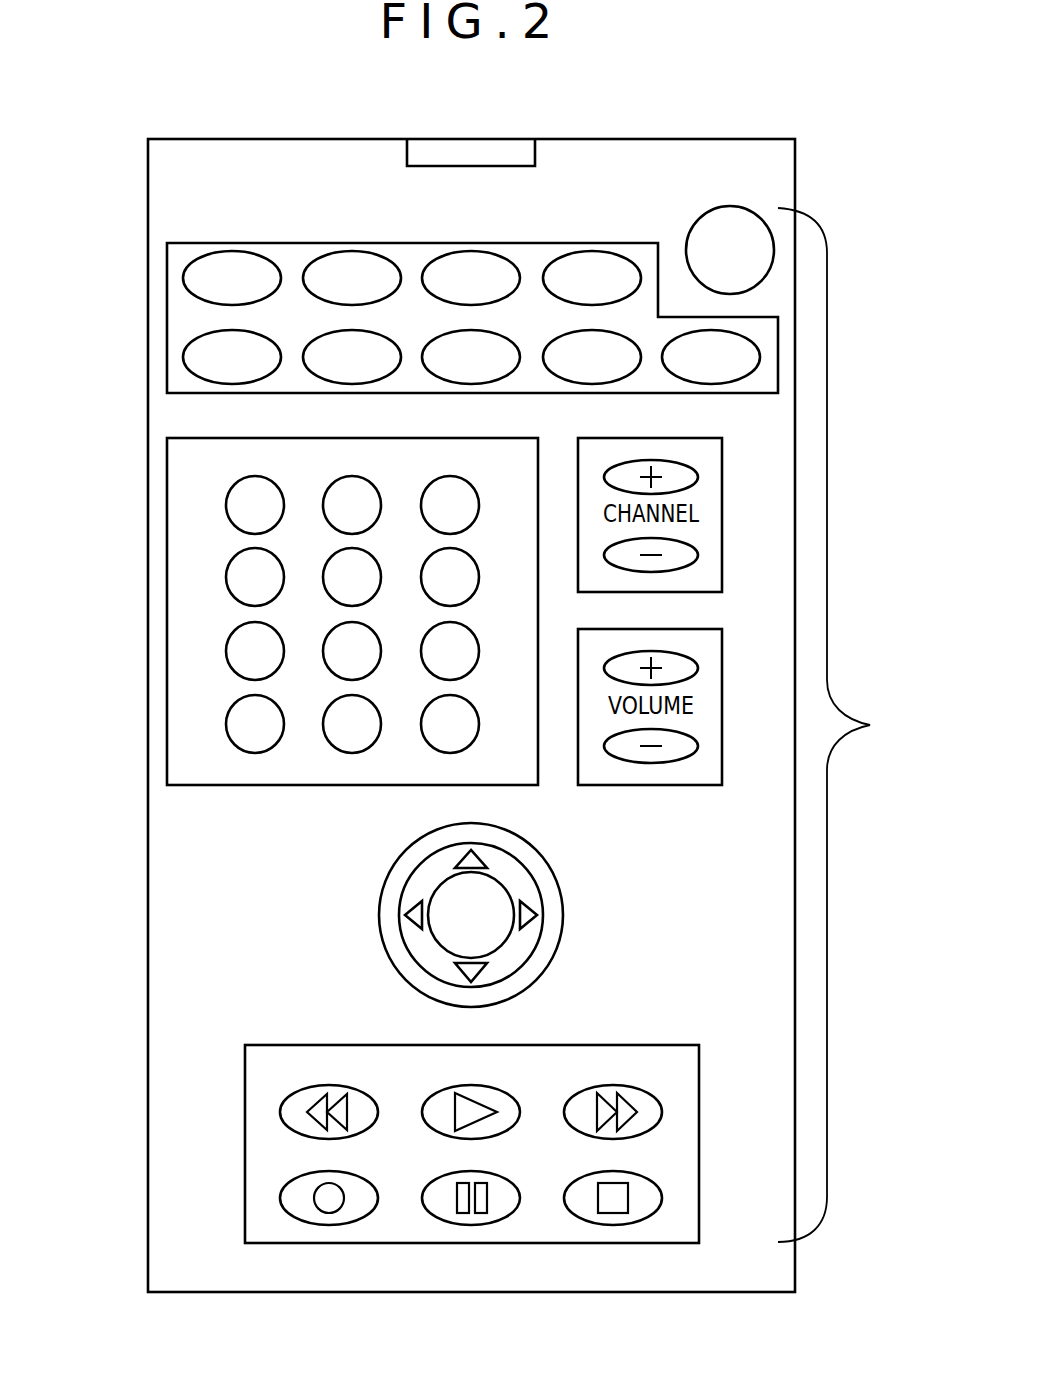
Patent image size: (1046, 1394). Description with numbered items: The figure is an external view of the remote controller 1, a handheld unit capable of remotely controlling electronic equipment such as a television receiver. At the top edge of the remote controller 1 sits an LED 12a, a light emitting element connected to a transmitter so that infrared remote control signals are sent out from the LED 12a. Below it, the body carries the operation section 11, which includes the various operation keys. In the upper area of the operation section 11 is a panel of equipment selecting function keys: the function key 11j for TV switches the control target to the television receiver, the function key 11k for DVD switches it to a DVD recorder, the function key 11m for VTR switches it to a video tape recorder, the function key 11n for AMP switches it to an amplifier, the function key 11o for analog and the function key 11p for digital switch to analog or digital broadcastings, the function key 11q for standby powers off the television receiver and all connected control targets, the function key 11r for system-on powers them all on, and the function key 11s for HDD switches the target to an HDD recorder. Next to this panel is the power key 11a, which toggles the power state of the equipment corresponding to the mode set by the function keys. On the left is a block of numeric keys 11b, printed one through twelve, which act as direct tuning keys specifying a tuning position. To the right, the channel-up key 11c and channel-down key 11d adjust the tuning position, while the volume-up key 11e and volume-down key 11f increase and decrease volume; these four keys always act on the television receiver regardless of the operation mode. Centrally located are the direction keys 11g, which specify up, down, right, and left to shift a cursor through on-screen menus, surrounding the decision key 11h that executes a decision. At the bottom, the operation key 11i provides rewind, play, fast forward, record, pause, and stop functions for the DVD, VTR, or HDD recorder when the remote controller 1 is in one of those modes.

The remote controller 1 is at (650, 139).
The LED 12a is at (472, 160).
The operation section 11 is at (850, 725).
The power key 11a is at (735, 217).
The numeric keys 11b is at (328, 490).
The channel-up key 11c is at (698, 477).
The channel-down key 11d is at (698, 555).
The volume-up key 11e is at (698, 668).
The volume-down key 11f is at (698, 746).
The direction keys 11g is at (485, 863).
The decision key 11h is at (492, 940).
The operation key 11i is at (375, 1125).
The function key for TV 11j is at (262, 264).
The function key for DVD 11k is at (384, 264).
The function key for VTR 11m is at (502, 264).
The function key for AMP 11n is at (621, 264).
The function key for analog 11o is at (253, 377).
The function key for digital 11p is at (367, 377).
The function key for standby 11q is at (480, 377).
The function key for system-on 11r is at (615, 377).
The function key for HDD 11s is at (723, 377).